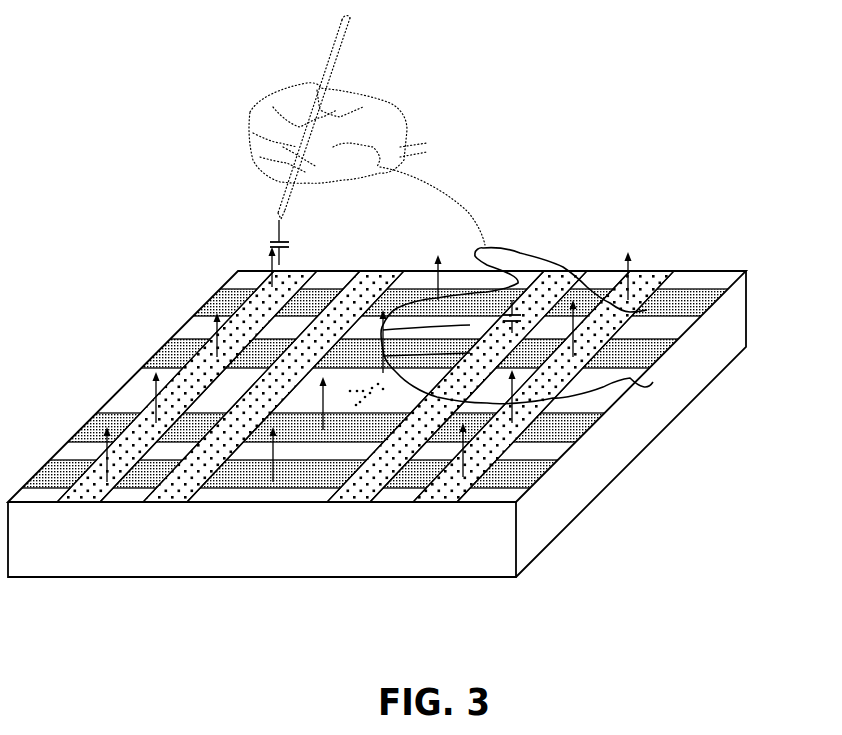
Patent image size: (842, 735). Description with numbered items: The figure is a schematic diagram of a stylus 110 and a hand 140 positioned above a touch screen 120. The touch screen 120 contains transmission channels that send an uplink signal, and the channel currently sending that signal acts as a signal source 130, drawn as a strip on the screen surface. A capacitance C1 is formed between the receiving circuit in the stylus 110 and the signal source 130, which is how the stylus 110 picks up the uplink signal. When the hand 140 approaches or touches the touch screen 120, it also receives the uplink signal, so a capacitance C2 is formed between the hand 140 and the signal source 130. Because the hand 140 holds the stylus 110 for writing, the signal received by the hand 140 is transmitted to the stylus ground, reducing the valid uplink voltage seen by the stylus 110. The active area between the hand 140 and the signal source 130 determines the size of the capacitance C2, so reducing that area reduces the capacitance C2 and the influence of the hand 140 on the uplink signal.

The stylus 110 is at (338, 43).
The touch screen 120 is at (742, 322).
The signal source 130 is at (374, 354).
The hand 140 is at (375, 127).
The capacitance C1 is at (292, 242).
The capacitance C2 is at (526, 316).